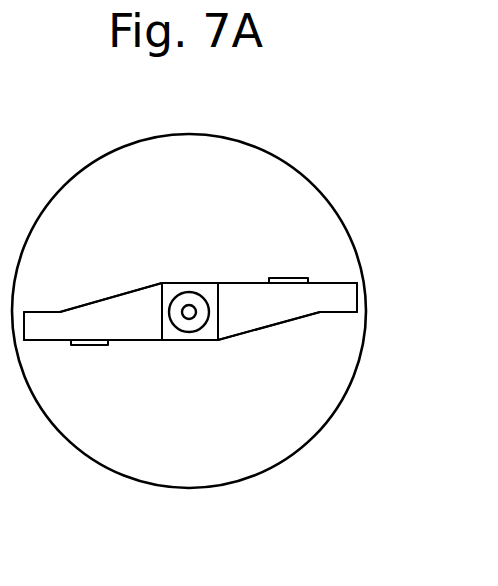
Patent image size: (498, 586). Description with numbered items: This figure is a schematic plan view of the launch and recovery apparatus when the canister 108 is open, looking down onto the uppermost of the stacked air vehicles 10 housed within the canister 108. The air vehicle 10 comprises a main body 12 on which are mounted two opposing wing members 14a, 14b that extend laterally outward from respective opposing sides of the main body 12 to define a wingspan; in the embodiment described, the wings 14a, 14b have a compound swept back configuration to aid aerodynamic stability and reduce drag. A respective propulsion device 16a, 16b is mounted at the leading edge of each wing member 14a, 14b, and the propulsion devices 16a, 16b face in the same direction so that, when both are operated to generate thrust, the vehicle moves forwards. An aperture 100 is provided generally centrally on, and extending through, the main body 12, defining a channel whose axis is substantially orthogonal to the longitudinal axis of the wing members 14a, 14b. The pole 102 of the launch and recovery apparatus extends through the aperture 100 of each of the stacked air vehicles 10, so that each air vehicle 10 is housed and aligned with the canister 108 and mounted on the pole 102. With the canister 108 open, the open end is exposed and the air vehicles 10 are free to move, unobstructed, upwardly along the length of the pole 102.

The air vehicle 10 is at (332, 275).
The main body 12 is at (172, 341).
The wing member 14a is at (112, 295).
The wing member 14b is at (312, 314).
The propulsion device 16a is at (90, 346).
The propulsion device 16b is at (293, 277).
The aperture 100 is at (196, 325).
The pole 102 is at (196, 304).
The canister 108 is at (120, 474).